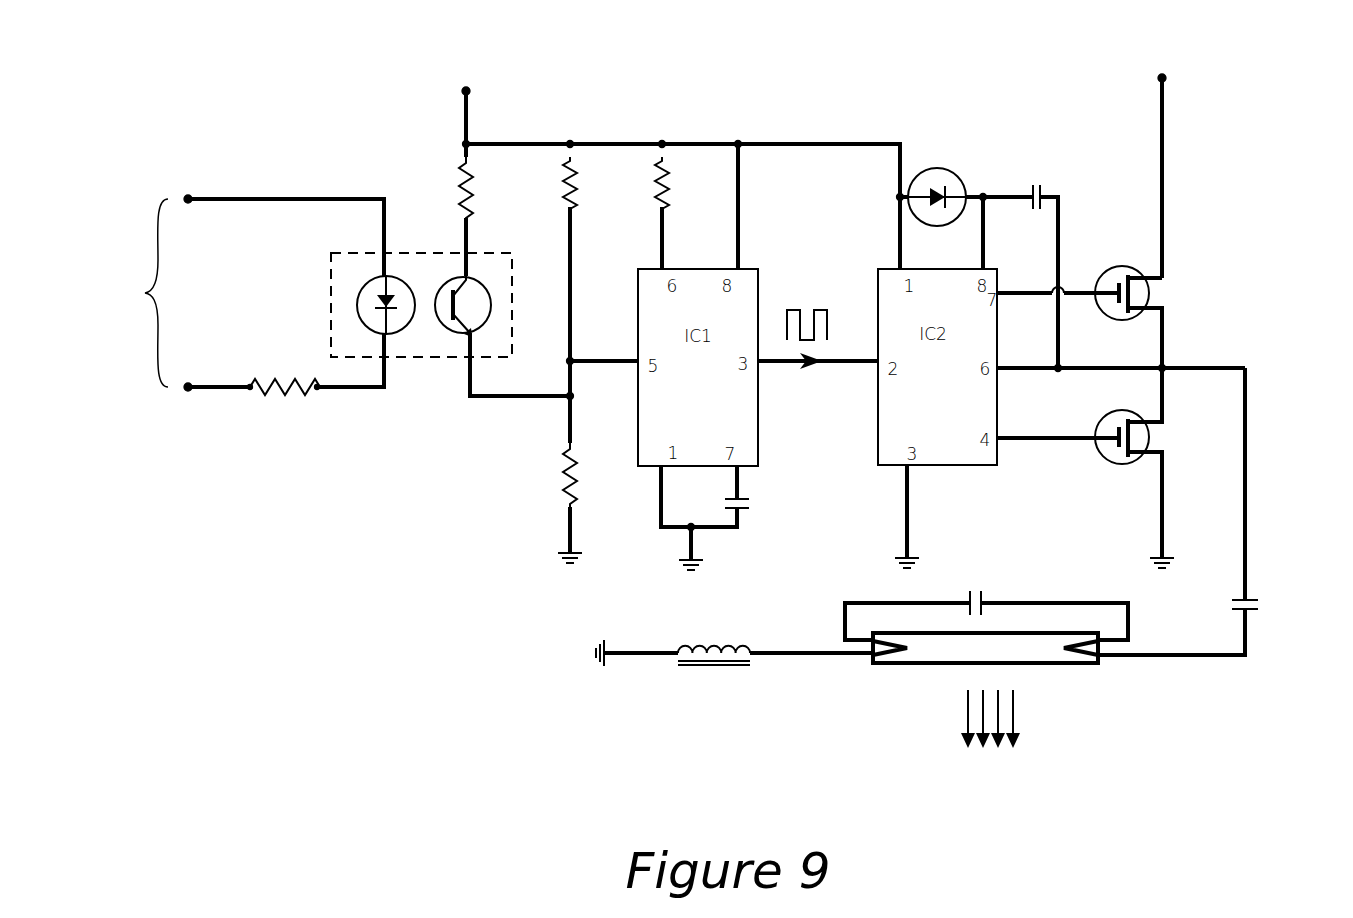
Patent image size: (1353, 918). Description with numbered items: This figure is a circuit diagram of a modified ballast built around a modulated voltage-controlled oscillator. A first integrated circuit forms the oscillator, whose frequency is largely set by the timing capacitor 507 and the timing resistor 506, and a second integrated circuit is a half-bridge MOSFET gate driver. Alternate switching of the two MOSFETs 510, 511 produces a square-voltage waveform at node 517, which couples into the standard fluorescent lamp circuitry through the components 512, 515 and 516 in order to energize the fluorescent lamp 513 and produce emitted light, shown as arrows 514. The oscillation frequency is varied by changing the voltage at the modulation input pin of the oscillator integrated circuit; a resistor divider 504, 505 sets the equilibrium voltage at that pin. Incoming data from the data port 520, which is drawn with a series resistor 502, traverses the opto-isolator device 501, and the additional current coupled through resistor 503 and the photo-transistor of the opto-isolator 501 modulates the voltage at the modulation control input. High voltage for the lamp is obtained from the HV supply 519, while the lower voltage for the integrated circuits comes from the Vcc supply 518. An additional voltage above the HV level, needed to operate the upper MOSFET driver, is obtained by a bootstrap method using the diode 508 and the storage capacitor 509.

The opto-isolator device 501 is at (442, 362).
The resistor 502 is at (290, 394).
The resistor 503 is at (466, 195).
The resistor divider resistor 504 is at (580, 178).
The resistor divider resistor 505 is at (570, 474).
The timing resistor 506 is at (668, 180).
The timing capacitor 507 is at (745, 504).
The diode 508 is at (937, 168).
The storage capacitor 509 is at (1042, 185).
The MOSFET 510 is at (1125, 268).
The MOSFET 511 is at (1127, 466).
The coupling component (capacitor) 512 is at (1258, 598).
The fluorescent lamp 513 is at (940, 666).
The emitted light 514 is at (990, 736).
The coupling component (capacitor) 515 is at (978, 590).
The coupling component (inductor) 516 is at (697, 636).
The node 517 is at (1167, 364).
The Vcc supply 518 is at (468, 91).
The HV supply 519 is at (1160, 85).
The data port 520 is at (235, 293).